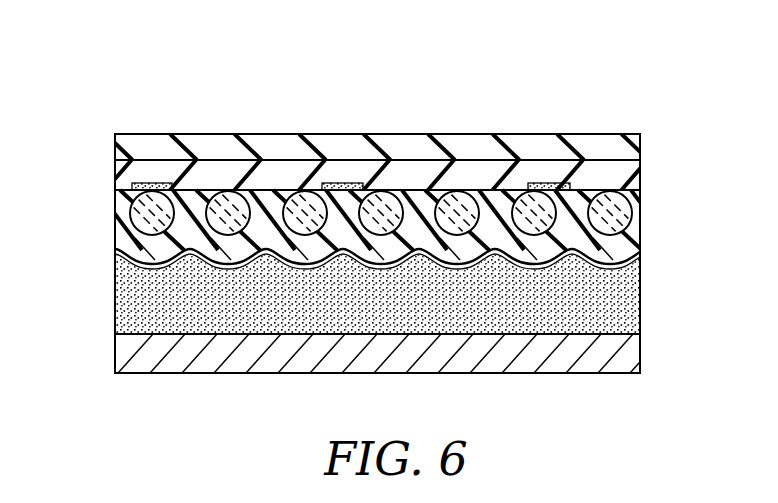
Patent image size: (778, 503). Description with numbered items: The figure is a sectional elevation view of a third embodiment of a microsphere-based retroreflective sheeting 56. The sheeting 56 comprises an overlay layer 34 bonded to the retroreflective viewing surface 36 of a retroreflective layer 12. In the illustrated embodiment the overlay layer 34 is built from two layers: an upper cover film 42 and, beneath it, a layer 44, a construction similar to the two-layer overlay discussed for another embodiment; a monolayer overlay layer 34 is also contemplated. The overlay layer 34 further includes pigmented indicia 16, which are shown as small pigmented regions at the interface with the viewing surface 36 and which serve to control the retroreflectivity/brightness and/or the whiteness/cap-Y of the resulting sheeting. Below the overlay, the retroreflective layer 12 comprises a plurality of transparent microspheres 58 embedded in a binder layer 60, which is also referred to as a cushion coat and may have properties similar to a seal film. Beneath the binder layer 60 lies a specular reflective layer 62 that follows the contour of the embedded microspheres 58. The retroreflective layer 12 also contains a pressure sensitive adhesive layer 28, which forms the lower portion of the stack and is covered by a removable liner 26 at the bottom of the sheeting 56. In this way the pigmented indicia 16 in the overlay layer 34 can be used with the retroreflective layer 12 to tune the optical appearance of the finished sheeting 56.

The microsphere-based retroreflective sheeting 56 is at (628, 58).
The cover film 42 is at (645, 151).
The layer 44 is at (627, 172).
The overlay layer 34 is at (98, 134).
The retroreflective viewing surface 36 is at (432, 190).
The pigmented indicia 16 is at (151, 183).
The transparent microspheres 58 is at (620, 217).
The binder layer 60 is at (625, 252).
The specular reflective layer 62 is at (628, 281).
The pressure sensitive adhesive layer 28 is at (627, 323).
The removable liner 26 is at (625, 355).
The retroreflective layer 12 is at (98, 198).